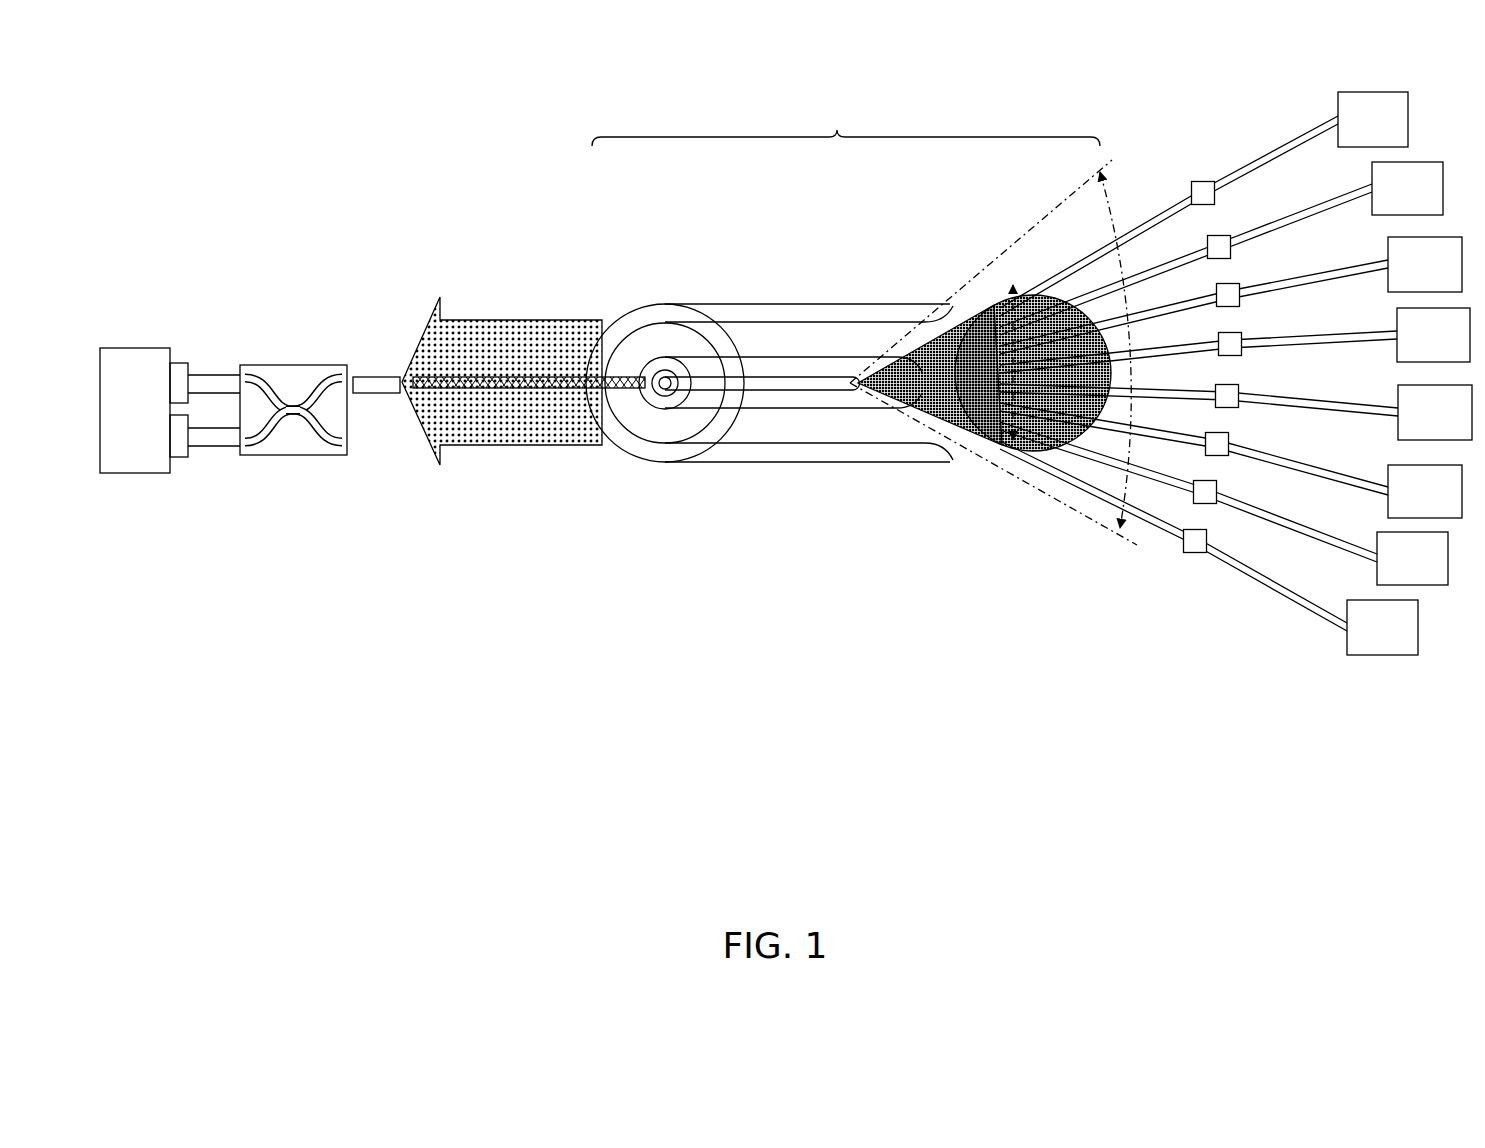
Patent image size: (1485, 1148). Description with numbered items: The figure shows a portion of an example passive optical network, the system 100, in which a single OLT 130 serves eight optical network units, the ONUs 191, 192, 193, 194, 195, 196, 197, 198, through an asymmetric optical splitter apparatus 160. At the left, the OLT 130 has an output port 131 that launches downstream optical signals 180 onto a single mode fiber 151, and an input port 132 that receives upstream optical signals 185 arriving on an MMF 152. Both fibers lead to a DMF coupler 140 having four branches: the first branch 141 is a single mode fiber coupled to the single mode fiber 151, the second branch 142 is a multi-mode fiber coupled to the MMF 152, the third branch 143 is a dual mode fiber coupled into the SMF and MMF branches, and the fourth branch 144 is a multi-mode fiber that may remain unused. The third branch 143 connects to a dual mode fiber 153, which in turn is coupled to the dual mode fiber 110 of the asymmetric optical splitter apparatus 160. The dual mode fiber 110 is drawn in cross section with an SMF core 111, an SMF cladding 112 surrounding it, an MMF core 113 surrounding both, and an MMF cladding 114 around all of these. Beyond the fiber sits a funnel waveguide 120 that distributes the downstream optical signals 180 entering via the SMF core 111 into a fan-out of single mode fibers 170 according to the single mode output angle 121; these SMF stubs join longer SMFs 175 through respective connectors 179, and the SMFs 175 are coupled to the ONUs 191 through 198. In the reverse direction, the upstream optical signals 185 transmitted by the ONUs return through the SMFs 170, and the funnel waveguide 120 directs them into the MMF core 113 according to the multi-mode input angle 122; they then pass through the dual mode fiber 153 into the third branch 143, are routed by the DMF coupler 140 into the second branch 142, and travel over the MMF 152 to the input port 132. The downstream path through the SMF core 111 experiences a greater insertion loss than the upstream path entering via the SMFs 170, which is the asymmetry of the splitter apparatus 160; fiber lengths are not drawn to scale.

The system 100 is at (169, 93).
The dual mode fiber 110 is at (768, 300).
The SMF core 111 is at (657, 387).
The SMF cladding 112 is at (660, 405).
The MMF core 113 is at (672, 430).
The MMF cladding 114 is at (692, 455).
The funnel waveguide 120 is at (942, 395).
The single mode output angle 121 is at (1031, 418).
The multi-mode input angle 122 is at (1123, 532).
The OLT 130 is at (119, 434).
The output port 131 is at (178, 360).
The input port 132 is at (178, 460).
The DMF coupler 140 is at (325, 384).
The branch 1 141 is at (256, 370).
The branch 2 142 is at (253, 452).
The branch 3 143 is at (337, 372).
The branch 4 144 is at (333, 450).
The single mode fiber 151 is at (212, 372).
The MMF 152 is at (218, 450).
The dual mode fiber 153 is at (384, 373).
The asymmetric optical splitter apparatus 160 is at (846, 95).
The single mode fibers 170 is at (1205, 132).
The SMFs 175 is at (1193, 119).
The connectors 179 is at (1231, 457).
The downstream optical signals 180 is at (503, 392).
The upstream optical signals 185 is at (465, 432).
The ONU 191 is at (1357, 141).
The ONU 192 is at (1391, 210).
The ONU 193 is at (1409, 286).
The ONU 194 is at (1417, 357).
The ONU 195 is at (1419, 434).
The ONU 196 is at (1409, 513).
The ONU 197 is at (1396, 580).
The ONU 198 is at (1366, 649).